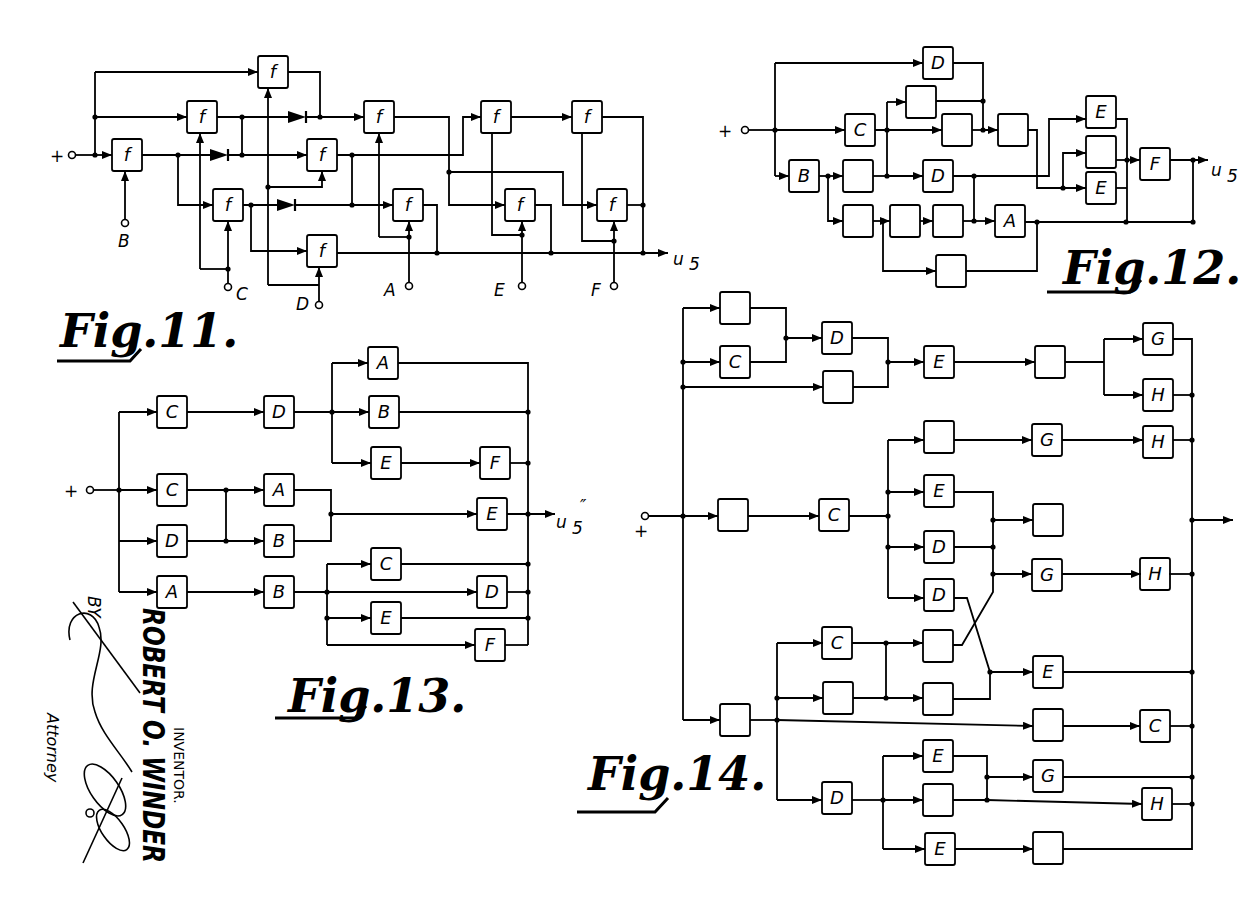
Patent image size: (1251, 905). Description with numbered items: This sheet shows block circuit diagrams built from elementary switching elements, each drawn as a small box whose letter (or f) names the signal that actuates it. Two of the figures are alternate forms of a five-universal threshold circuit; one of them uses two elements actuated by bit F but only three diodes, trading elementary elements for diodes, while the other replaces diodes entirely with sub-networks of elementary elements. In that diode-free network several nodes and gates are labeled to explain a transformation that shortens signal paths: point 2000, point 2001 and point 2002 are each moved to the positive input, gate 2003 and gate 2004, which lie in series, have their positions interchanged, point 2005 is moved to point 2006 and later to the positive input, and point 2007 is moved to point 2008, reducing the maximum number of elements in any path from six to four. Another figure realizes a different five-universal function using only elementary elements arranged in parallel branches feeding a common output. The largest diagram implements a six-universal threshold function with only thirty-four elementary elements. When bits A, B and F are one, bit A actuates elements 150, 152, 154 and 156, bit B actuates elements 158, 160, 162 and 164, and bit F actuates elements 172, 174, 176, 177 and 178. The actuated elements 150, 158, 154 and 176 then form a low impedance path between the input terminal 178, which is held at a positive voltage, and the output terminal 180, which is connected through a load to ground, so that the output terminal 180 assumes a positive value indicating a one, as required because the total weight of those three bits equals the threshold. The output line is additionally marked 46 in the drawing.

In FIG. 12, the point 2000 is at (832, 166).
In FIG. 12, the point 2001 is at (891, 98).
In FIG. 12, the point 2002 is at (918, 132).
In FIG. 12, the gate 2003 is at (948, 205).
In FIG. 12, the gate 2004 is at (952, 249).
In FIG. 12, the point 2005 is at (884, 227).
In FIG. 12, the point 2006 is at (826, 210).
In FIG. 12, the point 2007 is at (1068, 143).
In FIG. 12, the point 2008 is at (984, 101).
In FIG. 14, the element 150 is at (738, 703).
In FIG. 14, the element 152 is at (850, 403).
In FIG. 14, the element 154 is at (942, 662).
In FIG. 14, the element 156 is at (954, 706).
In FIG. 14, the element 158 is at (854, 707).
In FIG. 14, the element 160 is at (751, 301).
In FIG. 14, the element 162 is at (737, 499).
In FIG. 14, the element 164 is at (1063, 711).
In FIG. 14, the element 172 is at (945, 420).
In FIG. 14, the element 174 is at (1054, 346).
In FIG. 14, the element 176 is at (1056, 504).
In FIG. 14, the element 177 is at (953, 811).
In FIG. 14, the input terminal 178 is at (1063, 837).
In FIG. 14, the output terminal 180 is at (1194, 518).
In FIG. 14, the output 46 is at (1219, 537).